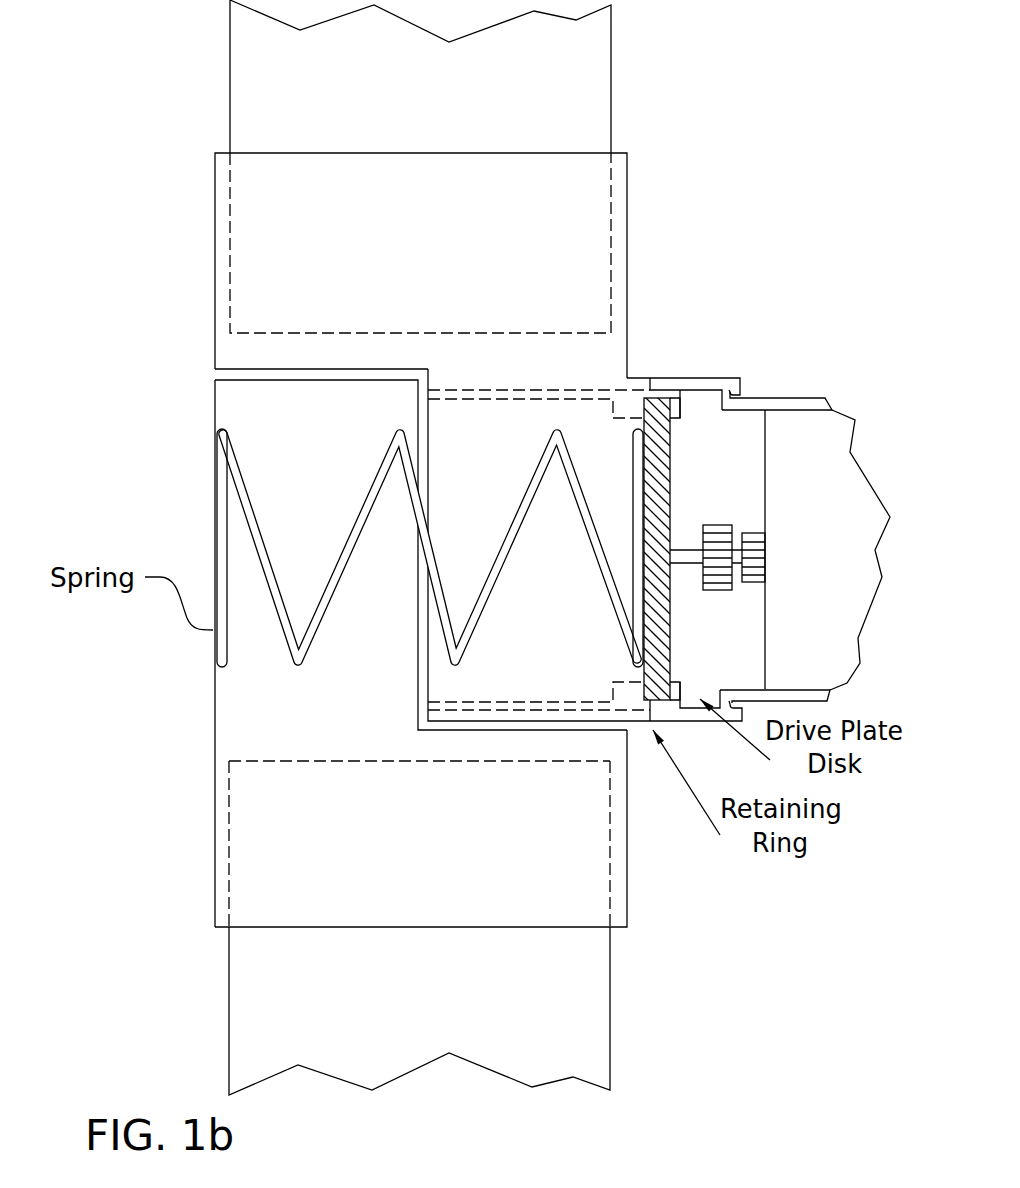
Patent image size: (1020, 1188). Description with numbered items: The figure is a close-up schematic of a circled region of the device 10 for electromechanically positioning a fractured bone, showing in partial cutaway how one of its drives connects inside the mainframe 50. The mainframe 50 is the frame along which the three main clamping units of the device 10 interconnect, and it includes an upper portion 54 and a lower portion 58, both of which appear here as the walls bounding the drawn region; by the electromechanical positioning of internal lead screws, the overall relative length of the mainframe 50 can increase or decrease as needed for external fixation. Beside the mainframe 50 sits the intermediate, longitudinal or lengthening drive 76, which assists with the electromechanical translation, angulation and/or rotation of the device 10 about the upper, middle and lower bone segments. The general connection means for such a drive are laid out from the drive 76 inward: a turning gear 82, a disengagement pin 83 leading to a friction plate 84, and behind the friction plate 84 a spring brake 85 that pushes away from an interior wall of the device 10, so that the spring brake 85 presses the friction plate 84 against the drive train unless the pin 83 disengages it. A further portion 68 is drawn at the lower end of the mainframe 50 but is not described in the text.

The device 10 is at (648, 217).
The mainframe 50 is at (202, 412).
The upper portion 54 is at (432, 104).
The lower portion 58 is at (316, 726).
The lower bracket wall 68 is at (432, 1016).
The lengthening drive 76 is at (842, 566).
The turning gear 82 is at (727, 525).
The disengagement pin 83 is at (685, 548).
The friction plate 84 is at (662, 436).
The spring brake 85 is at (197, 147).